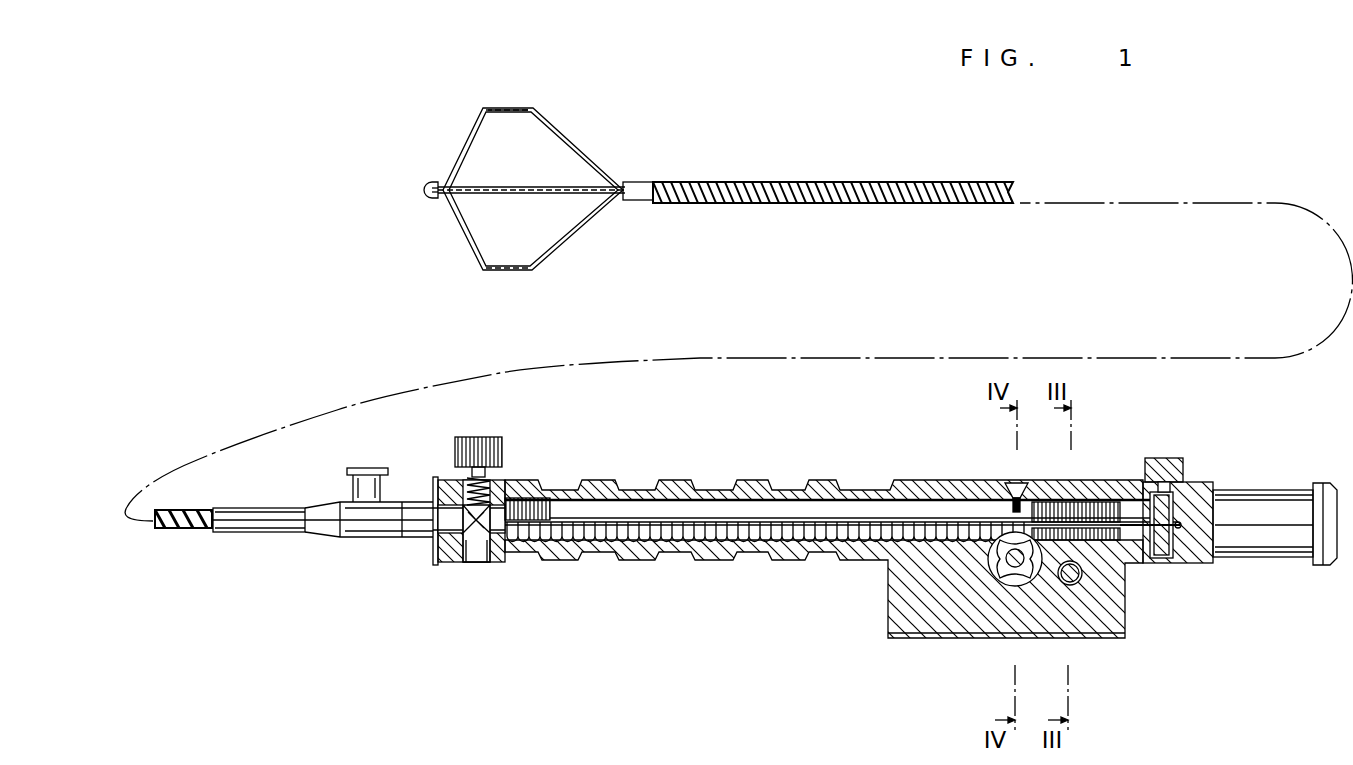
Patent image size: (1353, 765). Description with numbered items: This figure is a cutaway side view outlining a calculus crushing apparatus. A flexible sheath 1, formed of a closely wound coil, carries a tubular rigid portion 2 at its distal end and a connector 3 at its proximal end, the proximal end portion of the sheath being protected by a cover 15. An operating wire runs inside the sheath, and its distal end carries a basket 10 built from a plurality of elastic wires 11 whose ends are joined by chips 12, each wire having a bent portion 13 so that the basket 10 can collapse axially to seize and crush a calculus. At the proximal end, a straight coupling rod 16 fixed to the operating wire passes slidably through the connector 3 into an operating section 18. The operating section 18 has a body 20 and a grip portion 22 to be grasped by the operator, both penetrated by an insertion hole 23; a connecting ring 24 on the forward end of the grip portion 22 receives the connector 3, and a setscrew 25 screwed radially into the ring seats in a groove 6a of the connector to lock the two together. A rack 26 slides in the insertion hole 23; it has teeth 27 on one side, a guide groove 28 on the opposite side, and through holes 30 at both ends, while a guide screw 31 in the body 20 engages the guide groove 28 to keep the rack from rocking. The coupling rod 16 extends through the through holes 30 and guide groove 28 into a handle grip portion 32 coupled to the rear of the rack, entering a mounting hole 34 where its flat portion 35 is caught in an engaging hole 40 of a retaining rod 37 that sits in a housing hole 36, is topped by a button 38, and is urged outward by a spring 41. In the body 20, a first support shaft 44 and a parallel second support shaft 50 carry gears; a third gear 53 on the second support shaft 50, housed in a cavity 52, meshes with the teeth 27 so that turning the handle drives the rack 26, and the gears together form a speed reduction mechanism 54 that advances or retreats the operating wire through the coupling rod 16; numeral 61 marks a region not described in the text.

The flexible sheath 1 is at (851, 205).
The tubular rigid portion 2 is at (642, 203).
The connector 3 is at (350, 540).
The groove 6a is at (472, 557).
The basket 10 is at (491, 183).
The elastic wires 11 is at (557, 134).
The chips 12 is at (426, 190).
The bent portion 13 is at (533, 108).
The cover 15 is at (267, 533).
The coupling rod 16 is at (715, 522).
The operating section 18 is at (688, 603).
The body 20 is at (920, 630).
The grip portion 22 is at (824, 582).
The insertion hole 23 is at (636, 498).
The connecting ring 24 is at (495, 560).
The setscrew 25 is at (488, 437).
The rack 26 is at (897, 523).
The teeth 27 is at (642, 547).
The guide groove 28 is at (848, 510).
The through holes 30 is at (543, 498).
The guide screw 31 is at (1018, 483).
The handle grip portion 32 is at (1268, 555).
The mounting hole 34 is at (1135, 565).
The flat portion 35 is at (1215, 517).
The housing hole 36 is at (1177, 563).
The retaining rod 37 is at (1207, 493).
The button 38 is at (1178, 463).
The engaging hole 40 is at (1157, 518).
The spring 41 is at (1162, 553).
The first support shaft 44 is at (1075, 585).
The second support shaft 50 is at (1000, 556).
The cavity 52 is at (1028, 580).
The third gear 53 is at (1003, 583).
The speed reduction mechanism 54 is at (982, 465).
The adjusting portion 61 is at (1168, 434).